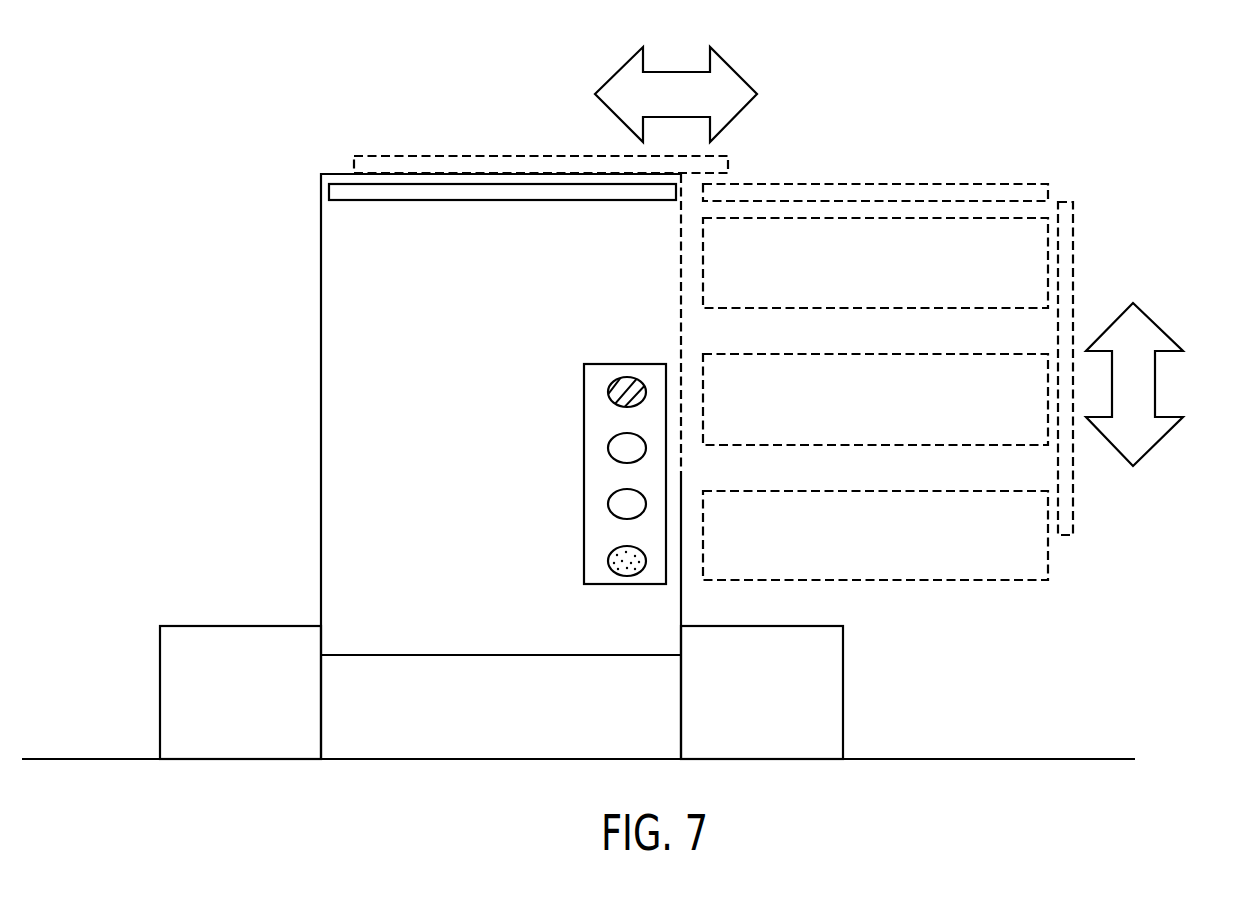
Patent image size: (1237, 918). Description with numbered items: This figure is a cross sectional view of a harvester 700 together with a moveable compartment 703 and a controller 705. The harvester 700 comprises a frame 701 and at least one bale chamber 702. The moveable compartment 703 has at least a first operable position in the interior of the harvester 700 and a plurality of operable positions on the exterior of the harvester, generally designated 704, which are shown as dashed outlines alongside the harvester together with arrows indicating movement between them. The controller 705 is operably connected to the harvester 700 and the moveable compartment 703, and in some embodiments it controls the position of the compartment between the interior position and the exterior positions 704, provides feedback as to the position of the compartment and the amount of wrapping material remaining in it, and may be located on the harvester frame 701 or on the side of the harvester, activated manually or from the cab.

The harvester 700 is at (278, 257).
The frame 701 is at (321, 406).
The bale chamber 702 is at (430, 410).
The moveable compartment 703 is at (427, 263).
The plurality of operable positions on the exterior of the harvester 704 is at (900, 387).
The controller 705 is at (584, 471).